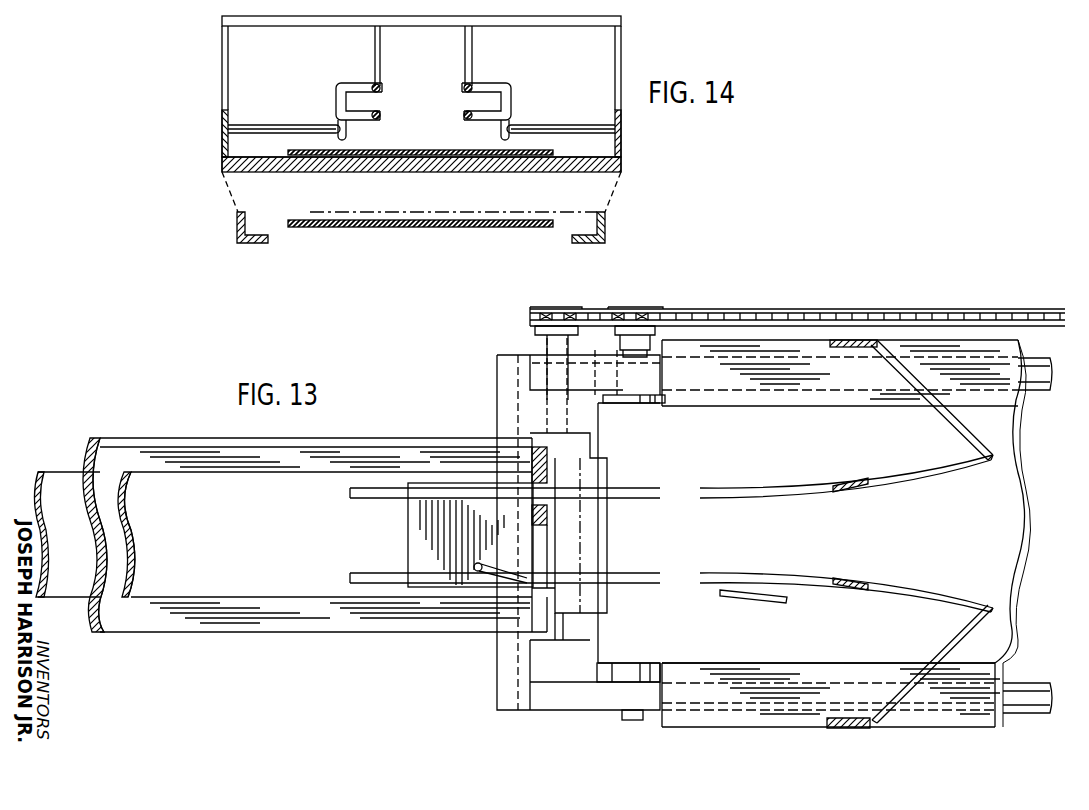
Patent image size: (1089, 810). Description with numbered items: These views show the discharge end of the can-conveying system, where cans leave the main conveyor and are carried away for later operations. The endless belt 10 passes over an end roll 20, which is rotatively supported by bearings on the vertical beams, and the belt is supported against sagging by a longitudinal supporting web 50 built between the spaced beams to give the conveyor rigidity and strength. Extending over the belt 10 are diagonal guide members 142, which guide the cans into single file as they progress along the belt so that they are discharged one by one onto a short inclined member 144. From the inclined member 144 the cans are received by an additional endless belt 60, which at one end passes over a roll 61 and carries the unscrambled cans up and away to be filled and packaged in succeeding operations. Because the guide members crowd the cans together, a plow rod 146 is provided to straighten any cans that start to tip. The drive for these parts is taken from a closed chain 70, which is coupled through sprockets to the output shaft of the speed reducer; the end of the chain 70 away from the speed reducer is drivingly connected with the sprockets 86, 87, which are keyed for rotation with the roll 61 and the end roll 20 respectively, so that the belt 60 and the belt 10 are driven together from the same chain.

In FIG. 14, the endless belt 10 is at (374, 151).
In FIG. 13, the endless belt 10 is at (987, 653).
In FIG. 13, the end roll 20 is at (630, 402).
In FIG. 14, the longitudinal supporting web 50 is at (418, 157).
In FIG. 13, the longitudinal supporting web 50 is at (990, 673).
In FIG. 13, the endless belt 60 is at (50, 476).
In FIG. 13, the roll 61 is at (563, 635).
In FIG. 13, the closed chain 70 is at (740, 308).
In FIG. 13, the sprocket 86 is at (545, 307).
In FIG. 13, the sprocket 87 is at (645, 307).
In FIG. 14, the diagonal guide member 142 is at (380, 90).
In FIG. 13, the diagonal guide member 142 is at (895, 486).
In FIG. 13, the inclined member 144 is at (418, 537).
In FIG. 13, the plow rod 146 is at (747, 592).